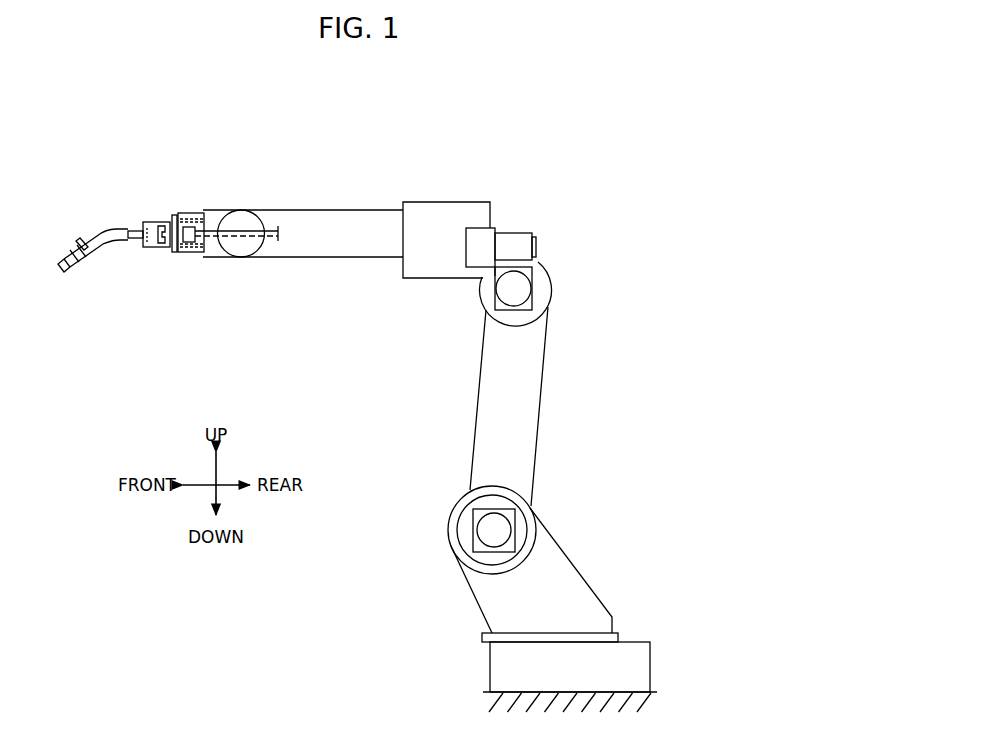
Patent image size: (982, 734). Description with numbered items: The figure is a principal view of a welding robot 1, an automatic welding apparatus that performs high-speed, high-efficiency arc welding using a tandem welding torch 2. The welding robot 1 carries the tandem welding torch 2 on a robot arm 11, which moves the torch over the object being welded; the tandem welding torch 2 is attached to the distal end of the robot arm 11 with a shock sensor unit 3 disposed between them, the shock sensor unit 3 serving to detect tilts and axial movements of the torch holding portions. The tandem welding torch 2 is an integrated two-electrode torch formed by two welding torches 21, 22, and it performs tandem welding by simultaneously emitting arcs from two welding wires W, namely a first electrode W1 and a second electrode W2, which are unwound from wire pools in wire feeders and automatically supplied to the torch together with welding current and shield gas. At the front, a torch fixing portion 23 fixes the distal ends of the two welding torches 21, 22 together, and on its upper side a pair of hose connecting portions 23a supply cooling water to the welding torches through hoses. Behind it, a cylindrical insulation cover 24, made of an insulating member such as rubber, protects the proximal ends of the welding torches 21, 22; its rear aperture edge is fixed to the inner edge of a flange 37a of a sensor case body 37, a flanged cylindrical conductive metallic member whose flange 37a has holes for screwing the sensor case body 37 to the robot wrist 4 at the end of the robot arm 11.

The welding robot 1 is at (525, 178).
The tandem welding torch 2 is at (142, 210).
The shock sensor unit 3 is at (163, 253).
The robot wrist 4 is at (192, 213).
The robot arm 11 is at (320, 210).
The welding torch 21 is at (87, 235).
The welding torch 22 is at (112, 228).
The torch fixing portion 23 is at (73, 254).
The hose connecting portion 23a is at (76, 240).
The insulation cover 24 is at (151, 248).
The sensor case body 37 is at (205, 241).
The flange 37a is at (174, 253).
The welding wires W is at (80, 287).
The first electrode W1 is at (80, 287).
The second electrode W2 is at (65, 268).